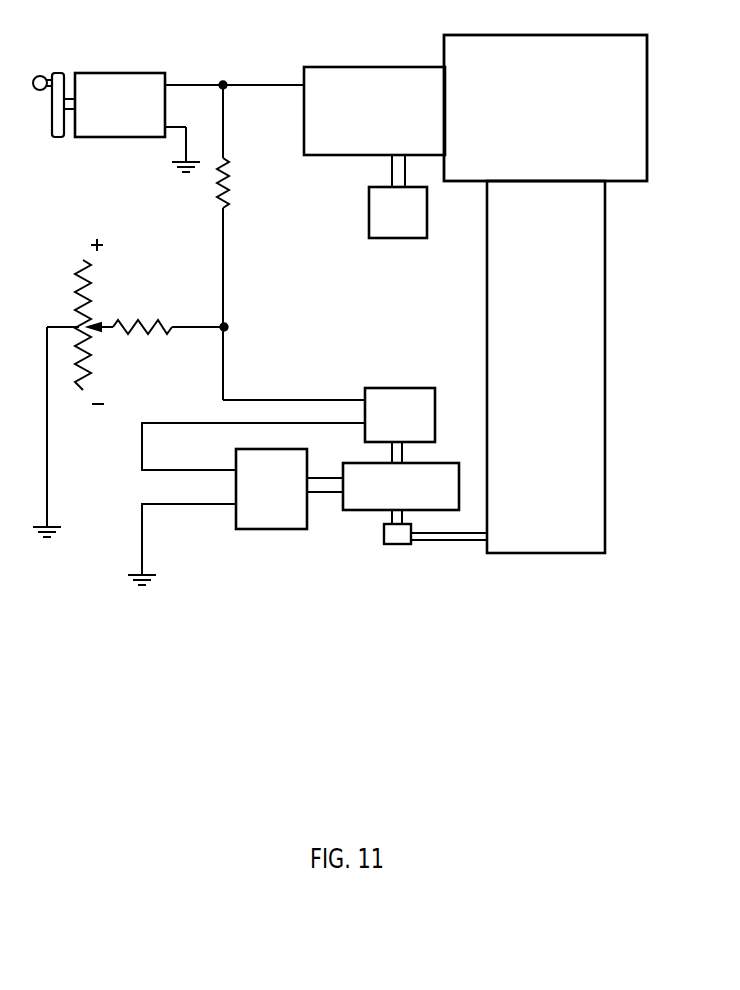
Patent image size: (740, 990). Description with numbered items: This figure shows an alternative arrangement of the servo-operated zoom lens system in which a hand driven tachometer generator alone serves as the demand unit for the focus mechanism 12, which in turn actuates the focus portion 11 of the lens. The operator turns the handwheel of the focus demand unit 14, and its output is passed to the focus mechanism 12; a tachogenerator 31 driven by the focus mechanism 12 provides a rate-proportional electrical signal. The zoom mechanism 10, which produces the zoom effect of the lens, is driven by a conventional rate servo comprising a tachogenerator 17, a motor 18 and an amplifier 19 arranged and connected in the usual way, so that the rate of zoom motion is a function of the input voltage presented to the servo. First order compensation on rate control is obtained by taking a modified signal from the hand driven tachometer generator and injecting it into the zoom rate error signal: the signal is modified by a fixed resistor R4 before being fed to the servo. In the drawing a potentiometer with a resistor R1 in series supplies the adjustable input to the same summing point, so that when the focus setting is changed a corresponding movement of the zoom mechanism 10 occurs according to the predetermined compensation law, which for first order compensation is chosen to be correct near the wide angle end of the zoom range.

The zoom mechanism 10 is at (546, 367).
The focus portion 11 is at (545, 108).
The focus mechanism 12 is at (374, 111).
The focus demand unit 14 is at (99, 105).
The tachogenerator 17 is at (400, 415).
The motor 18 is at (401, 486).
The amplifier 19 is at (271, 489).
The tachogenerator 31 is at (398, 212).
The fixed resistor R4 is at (237, 183).
The resistor R1 is at (142, 315).